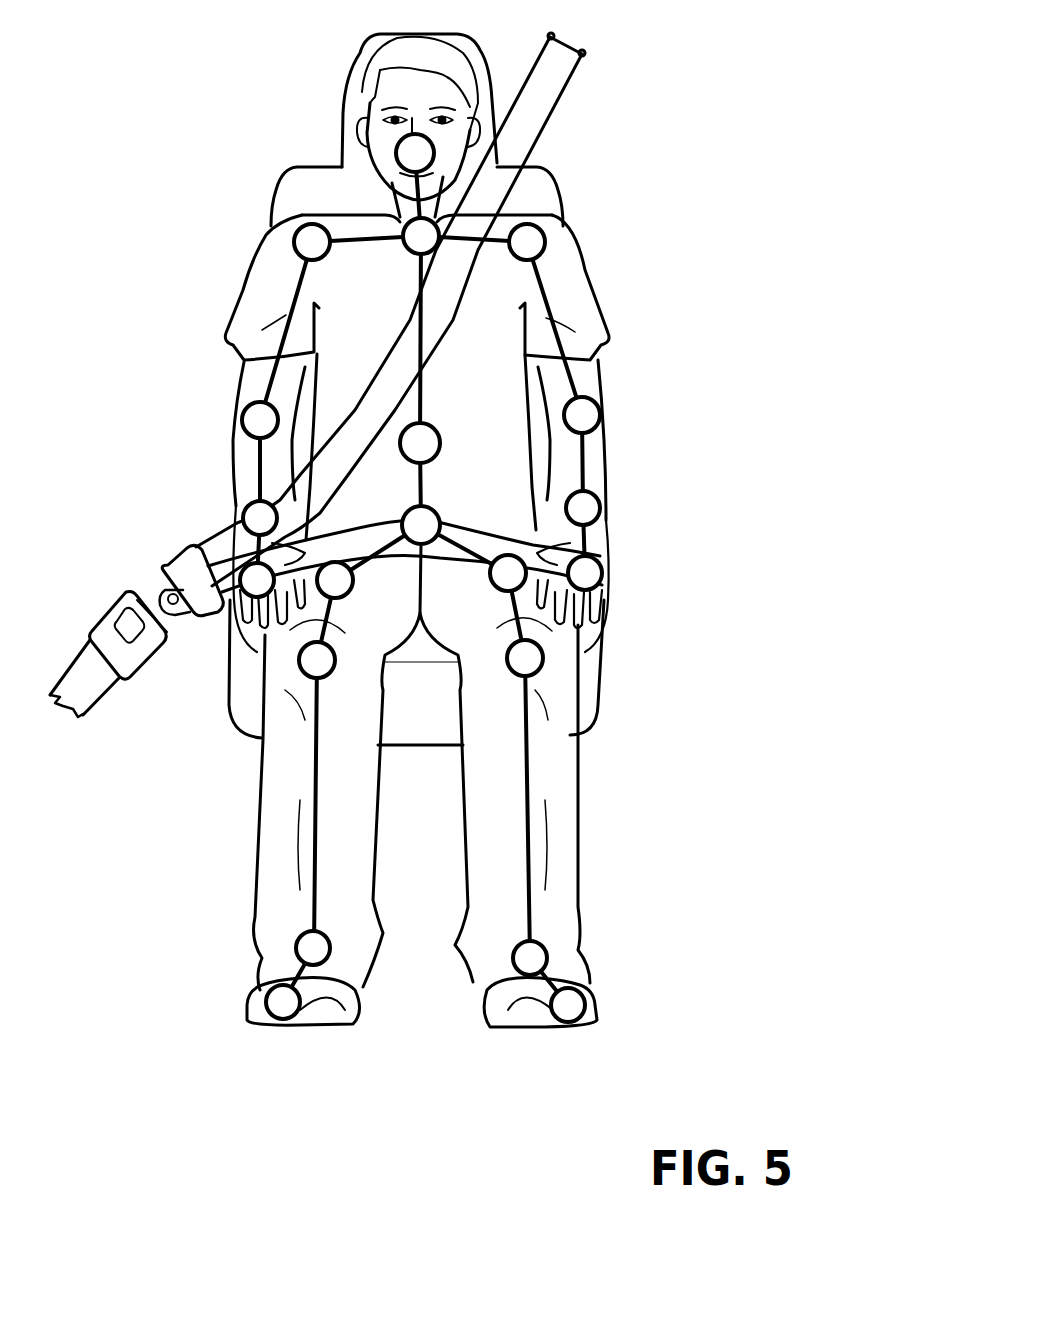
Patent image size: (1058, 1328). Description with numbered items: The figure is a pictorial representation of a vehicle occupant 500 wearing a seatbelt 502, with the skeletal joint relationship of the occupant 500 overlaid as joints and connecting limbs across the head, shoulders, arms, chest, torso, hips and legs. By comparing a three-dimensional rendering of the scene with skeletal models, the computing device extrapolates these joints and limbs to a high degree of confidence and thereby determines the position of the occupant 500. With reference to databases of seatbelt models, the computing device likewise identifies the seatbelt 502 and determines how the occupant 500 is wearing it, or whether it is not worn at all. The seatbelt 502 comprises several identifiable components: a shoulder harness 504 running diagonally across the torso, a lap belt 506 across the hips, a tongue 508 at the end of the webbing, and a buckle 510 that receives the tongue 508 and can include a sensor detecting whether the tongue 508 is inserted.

The vehicle occupant 500 is at (310, 172).
The seatbelt 502 is at (382, 360).
The shoulder harness 504 is at (558, 97).
The lap belt 506 is at (613, 555).
The tongue 508 is at (183, 547).
The buckle 510 is at (102, 615).